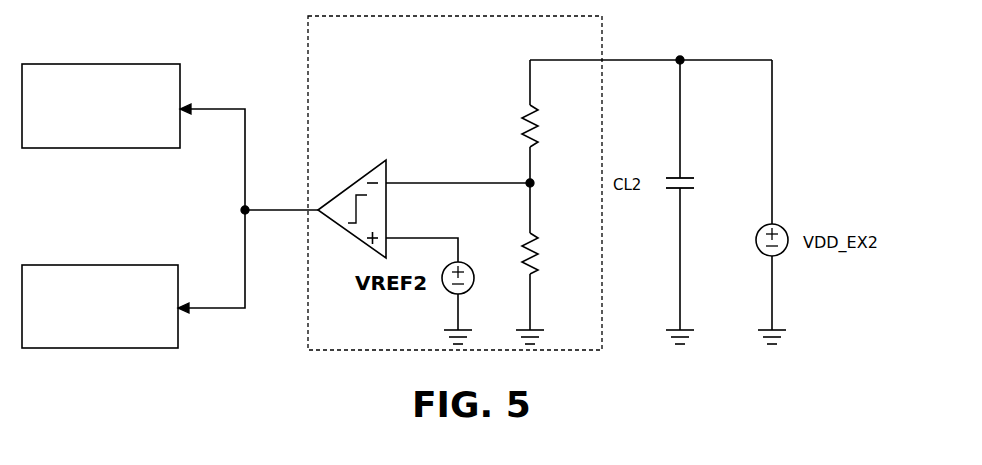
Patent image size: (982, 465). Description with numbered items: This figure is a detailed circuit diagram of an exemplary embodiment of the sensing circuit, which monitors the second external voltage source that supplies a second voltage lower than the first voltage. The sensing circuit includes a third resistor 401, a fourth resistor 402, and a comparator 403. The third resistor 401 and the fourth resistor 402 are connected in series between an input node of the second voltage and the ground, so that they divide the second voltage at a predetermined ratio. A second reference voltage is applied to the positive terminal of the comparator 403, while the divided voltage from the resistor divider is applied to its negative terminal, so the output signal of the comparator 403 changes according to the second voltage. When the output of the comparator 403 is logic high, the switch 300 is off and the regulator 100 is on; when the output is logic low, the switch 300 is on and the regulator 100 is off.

The switch 300 is at (108, 62).
The regulator 100 is at (103, 263).
The comparator 403 is at (386, 172).
The third resistor R3 401 is at (537, 108).
The fourth resistor R4 402 is at (536, 233).